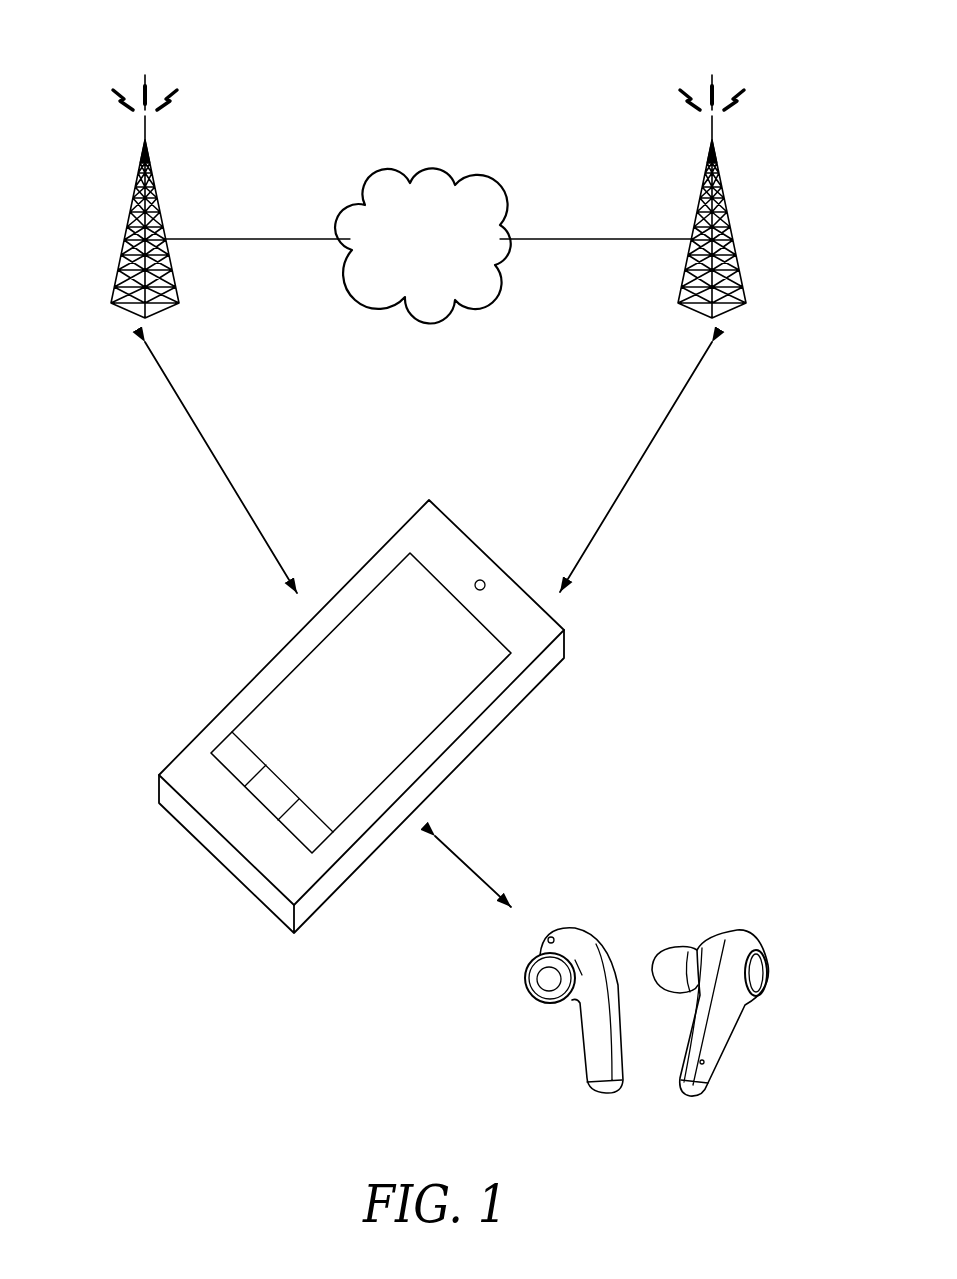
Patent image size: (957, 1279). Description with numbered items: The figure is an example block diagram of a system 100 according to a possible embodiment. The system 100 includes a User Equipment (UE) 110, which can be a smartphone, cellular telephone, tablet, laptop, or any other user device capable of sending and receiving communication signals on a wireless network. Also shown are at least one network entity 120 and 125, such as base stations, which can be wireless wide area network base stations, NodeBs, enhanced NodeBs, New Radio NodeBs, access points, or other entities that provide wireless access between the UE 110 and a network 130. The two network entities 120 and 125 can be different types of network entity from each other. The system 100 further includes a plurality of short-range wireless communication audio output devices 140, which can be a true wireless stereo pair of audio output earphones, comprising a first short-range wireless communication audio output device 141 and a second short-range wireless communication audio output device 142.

The system 100 is at (800, 47).
The User Equipment (UE) 110 is at (429, 500).
The network entity 120 is at (112, 243).
The network entity 125 is at (735, 251).
The network 130 is at (415, 176).
The plurality of short-range wireless communication audio output devices 140 is at (757, 887).
The first short-range wireless communication audio output device 141 is at (535, 978).
The second short-range wireless communication audio output device 142 is at (766, 973).